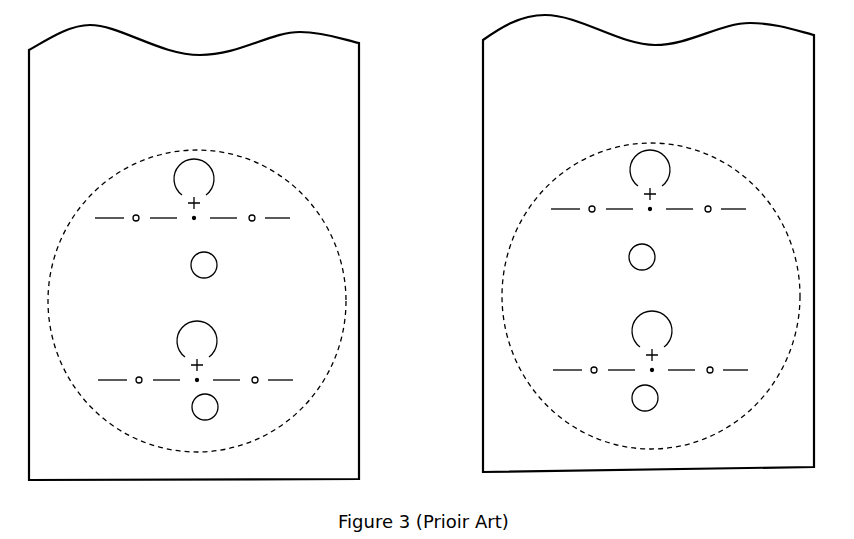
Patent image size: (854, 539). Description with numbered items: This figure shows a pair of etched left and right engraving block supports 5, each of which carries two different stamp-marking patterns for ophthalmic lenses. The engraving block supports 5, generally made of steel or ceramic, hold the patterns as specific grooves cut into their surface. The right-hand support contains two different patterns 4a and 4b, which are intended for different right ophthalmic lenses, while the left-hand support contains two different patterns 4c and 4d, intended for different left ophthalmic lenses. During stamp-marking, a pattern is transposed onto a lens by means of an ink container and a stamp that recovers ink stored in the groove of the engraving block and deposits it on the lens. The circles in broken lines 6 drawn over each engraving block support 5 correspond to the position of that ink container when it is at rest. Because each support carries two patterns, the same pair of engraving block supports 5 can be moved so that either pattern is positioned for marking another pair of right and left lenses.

The engraving block support 5 is at (518, 110).
The circles in broken lines 6 is at (546, 400).
The pattern 4a is at (245, 170).
The pattern 4b is at (262, 322).
The pattern 4c is at (592, 182).
The pattern 4d is at (602, 333).